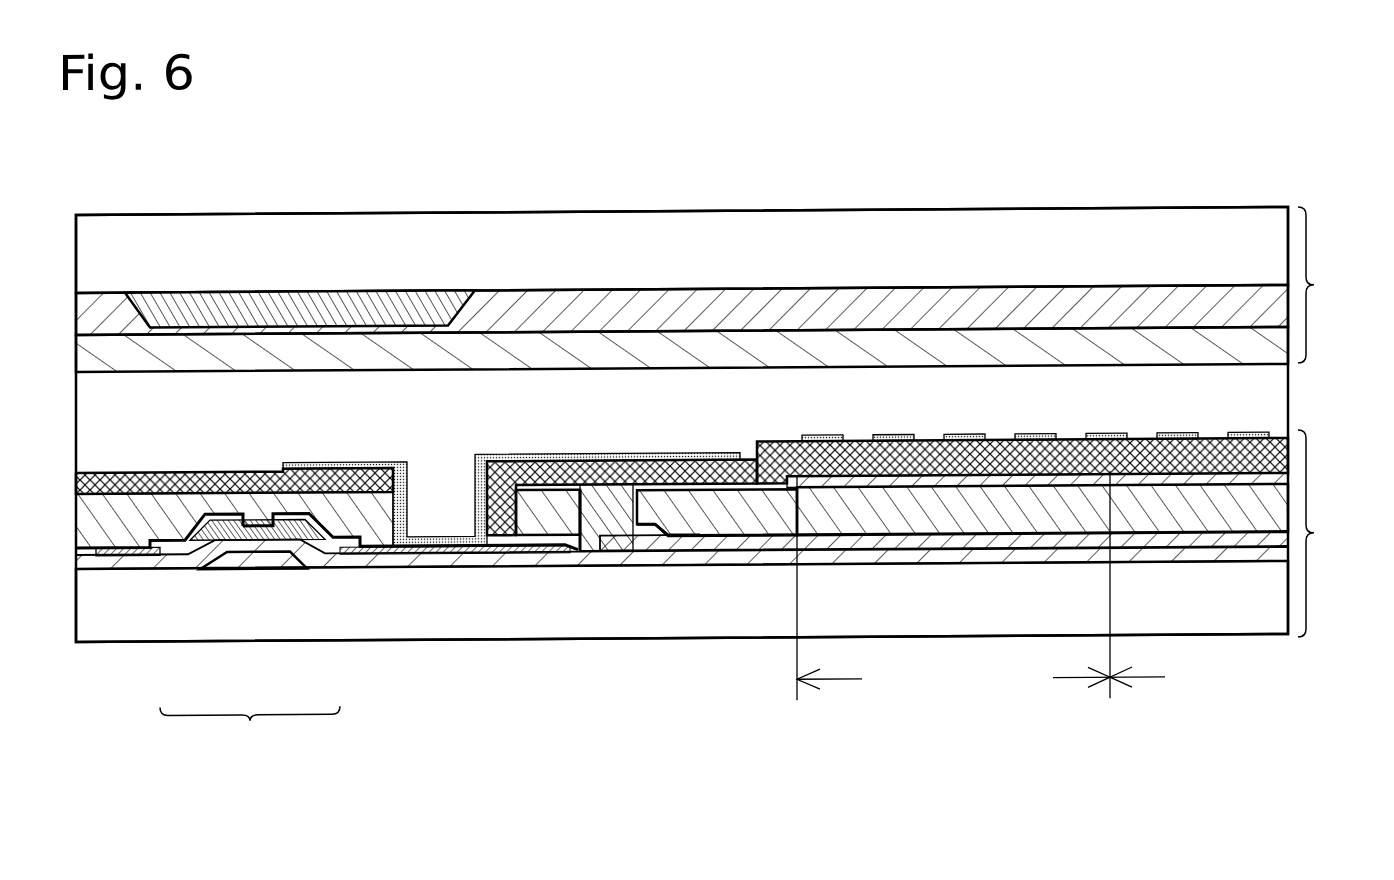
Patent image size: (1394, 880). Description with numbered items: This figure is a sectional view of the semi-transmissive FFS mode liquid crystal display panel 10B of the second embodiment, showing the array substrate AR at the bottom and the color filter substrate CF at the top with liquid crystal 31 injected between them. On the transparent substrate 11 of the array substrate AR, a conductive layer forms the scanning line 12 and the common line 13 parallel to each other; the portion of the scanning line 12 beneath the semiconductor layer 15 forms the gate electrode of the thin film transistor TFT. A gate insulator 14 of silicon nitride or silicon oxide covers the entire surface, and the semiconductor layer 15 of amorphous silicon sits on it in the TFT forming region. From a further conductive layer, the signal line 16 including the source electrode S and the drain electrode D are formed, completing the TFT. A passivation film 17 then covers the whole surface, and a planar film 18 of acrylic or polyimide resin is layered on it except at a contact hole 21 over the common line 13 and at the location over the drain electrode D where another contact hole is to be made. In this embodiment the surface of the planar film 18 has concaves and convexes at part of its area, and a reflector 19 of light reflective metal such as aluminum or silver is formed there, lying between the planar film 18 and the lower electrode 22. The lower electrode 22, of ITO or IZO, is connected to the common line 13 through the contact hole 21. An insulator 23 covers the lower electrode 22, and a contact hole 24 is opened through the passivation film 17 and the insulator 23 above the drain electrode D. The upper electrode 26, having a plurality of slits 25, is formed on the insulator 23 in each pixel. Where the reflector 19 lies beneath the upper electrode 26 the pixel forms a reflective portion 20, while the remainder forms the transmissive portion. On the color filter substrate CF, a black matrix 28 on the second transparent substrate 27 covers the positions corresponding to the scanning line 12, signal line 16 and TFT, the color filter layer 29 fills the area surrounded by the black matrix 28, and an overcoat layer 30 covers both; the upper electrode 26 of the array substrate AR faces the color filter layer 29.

The semi-transmissive FFS mode liquid crystal display panel 10B is at (155, 177).
The transparent substrate 11 is at (440, 622).
The scanning line 12 is at (228, 572).
The common line 13 is at (580, 557).
The gate insulator 14 is at (515, 558).
The semiconductor layer 15 is at (230, 520).
The signal line 16 is at (128, 572).
The passivation film 17 is at (368, 572).
The planar film 18 is at (134, 531).
The reflector 19 is at (930, 490).
The reflective portion 20 is at (1071, 586).
The contact hole 21 is at (611, 533).
The lower electrode 22 is at (676, 500).
The insulator 23 is at (152, 472).
The contact hole 24 is at (441, 528).
The slit 25 is at (1221, 436).
The upper electrode 26 is at (716, 456).
The second transparent substrate 27 is at (996, 241).
The black matrix 28 is at (291, 307).
The color filter layer 29 is at (1090, 307).
The overcoat layer 30 is at (1168, 355).
The liquid crystal 31 is at (838, 412).
The source electrode S is at (198, 572).
The drain electrode D is at (308, 572).
The thin film transistor TFT is at (250, 735).
The color filter substrate CF is at (1331, 284).
The array substrate AR is at (1332, 532).